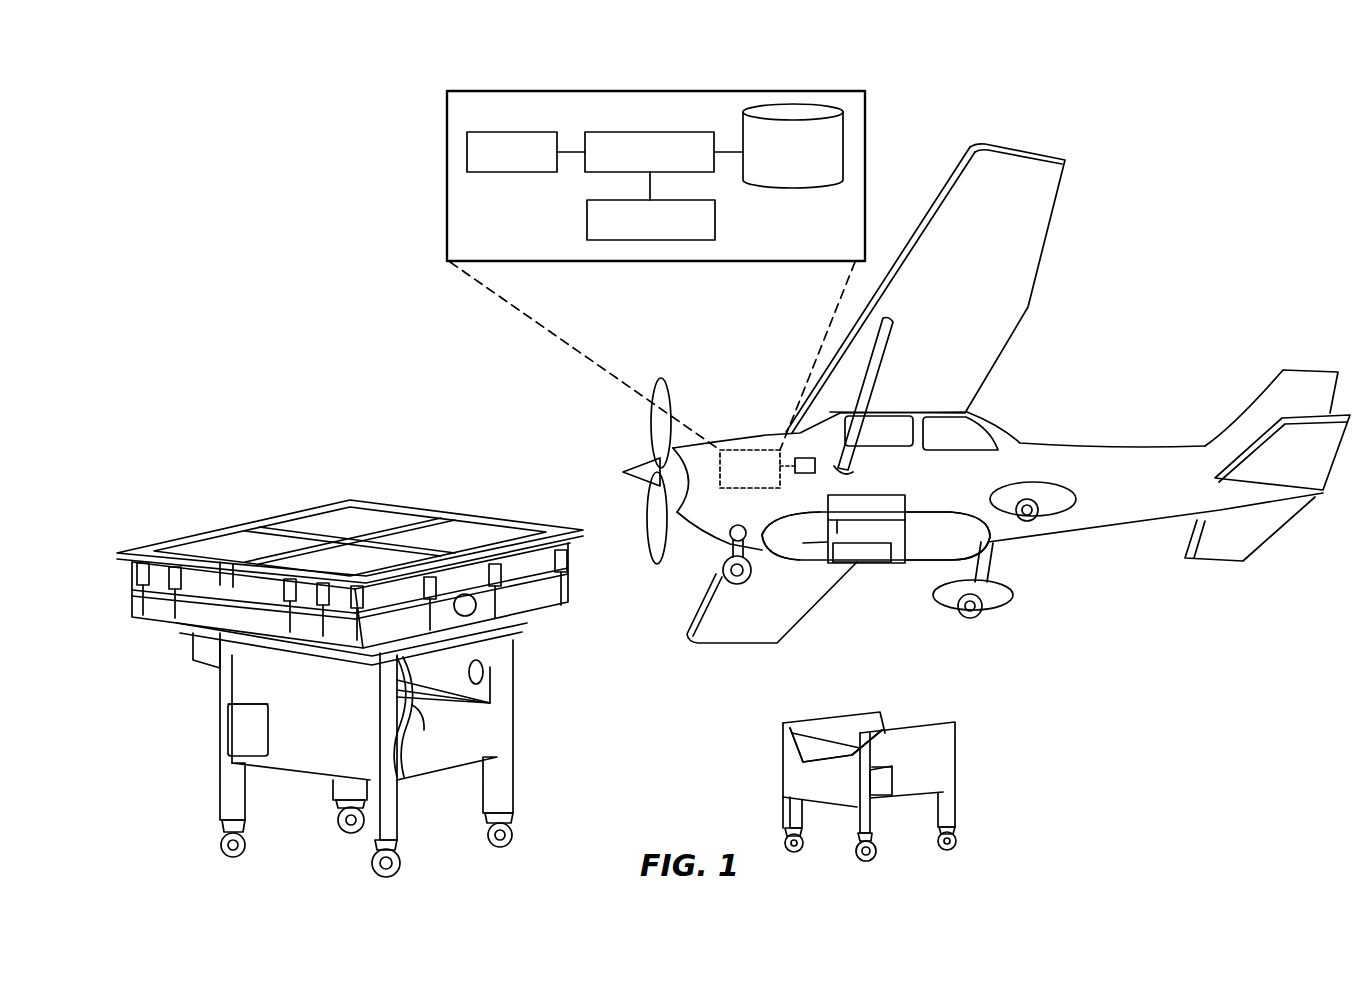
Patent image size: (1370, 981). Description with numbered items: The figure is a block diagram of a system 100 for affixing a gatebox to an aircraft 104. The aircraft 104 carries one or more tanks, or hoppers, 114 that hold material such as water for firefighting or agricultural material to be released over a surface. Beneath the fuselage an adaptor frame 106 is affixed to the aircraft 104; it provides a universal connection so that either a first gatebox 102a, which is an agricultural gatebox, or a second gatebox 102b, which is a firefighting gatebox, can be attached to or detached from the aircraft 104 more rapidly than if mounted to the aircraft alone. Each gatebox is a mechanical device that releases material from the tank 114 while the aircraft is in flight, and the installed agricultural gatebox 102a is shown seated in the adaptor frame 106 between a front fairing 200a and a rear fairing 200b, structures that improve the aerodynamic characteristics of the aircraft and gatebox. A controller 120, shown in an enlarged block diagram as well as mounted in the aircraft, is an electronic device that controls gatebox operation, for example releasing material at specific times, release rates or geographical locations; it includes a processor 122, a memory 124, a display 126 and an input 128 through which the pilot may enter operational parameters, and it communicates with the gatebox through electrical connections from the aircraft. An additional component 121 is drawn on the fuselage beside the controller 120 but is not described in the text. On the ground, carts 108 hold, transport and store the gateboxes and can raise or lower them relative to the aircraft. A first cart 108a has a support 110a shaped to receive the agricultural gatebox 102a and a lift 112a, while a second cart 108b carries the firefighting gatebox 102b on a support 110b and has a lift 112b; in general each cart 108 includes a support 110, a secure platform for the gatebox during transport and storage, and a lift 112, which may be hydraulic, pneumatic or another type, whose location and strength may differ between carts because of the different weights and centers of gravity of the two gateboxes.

The system 100 is at (1258, 143).
The first gatebox 102a is at (850, 564).
The second gatebox 102b is at (503, 515).
The aircraft 104 is at (1060, 450).
The adaptor frame 106 is at (784, 556).
The cart 108 is at (617, 767).
The cart 108a is at (800, 778).
The cart 108b is at (498, 727).
The support 110 is at (397, 777).
The support 110a is at (833, 730).
The support 110b is at (426, 722).
The lift 112 is at (243, 752).
The lift 112a is at (892, 778).
The lift 112b is at (238, 733).
The tank 114 is at (885, 497).
The controller 120 is at (692, 289).
The sensor 121 is at (810, 462).
The processor 122 is at (598, 173).
The memory 124 is at (793, 188).
The display 126 is at (493, 173).
The input 128 is at (587, 222).
The front fairing 200a is at (778, 512).
The rear fairing 200b is at (935, 562).